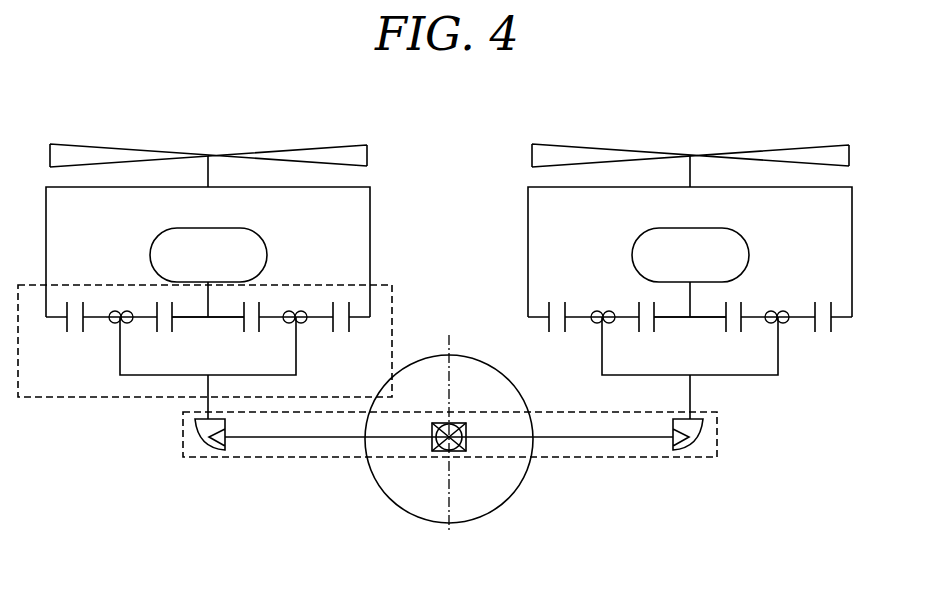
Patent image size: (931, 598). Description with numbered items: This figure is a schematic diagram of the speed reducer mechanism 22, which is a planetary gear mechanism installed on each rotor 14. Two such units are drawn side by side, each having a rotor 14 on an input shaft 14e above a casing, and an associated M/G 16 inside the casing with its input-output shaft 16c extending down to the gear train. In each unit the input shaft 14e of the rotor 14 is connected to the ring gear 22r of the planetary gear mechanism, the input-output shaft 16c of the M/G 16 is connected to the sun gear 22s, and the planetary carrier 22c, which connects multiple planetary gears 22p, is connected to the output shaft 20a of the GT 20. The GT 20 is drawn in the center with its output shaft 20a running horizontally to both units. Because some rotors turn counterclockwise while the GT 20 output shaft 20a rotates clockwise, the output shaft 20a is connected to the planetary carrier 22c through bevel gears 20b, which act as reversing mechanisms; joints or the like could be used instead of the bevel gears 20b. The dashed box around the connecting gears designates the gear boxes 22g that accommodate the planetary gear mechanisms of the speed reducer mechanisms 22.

The rotor 14 is at (325, 145).
The input shaft 14e is at (688, 178).
The M/G 16 is at (234, 229).
The input-output shaft 16c is at (686, 298).
The GT 20 is at (478, 355).
The output shaft 20a is at (341, 440).
The bevel gears 20b is at (673, 446).
The speed reducer mechanism 22 is at (105, 398).
The ring gear 22r is at (527, 222).
The planetary gears 22p is at (117, 324).
The sun gear 22s is at (190, 321).
The planetary carrier 22c is at (297, 357).
The gear boxes 22g is at (720, 426).